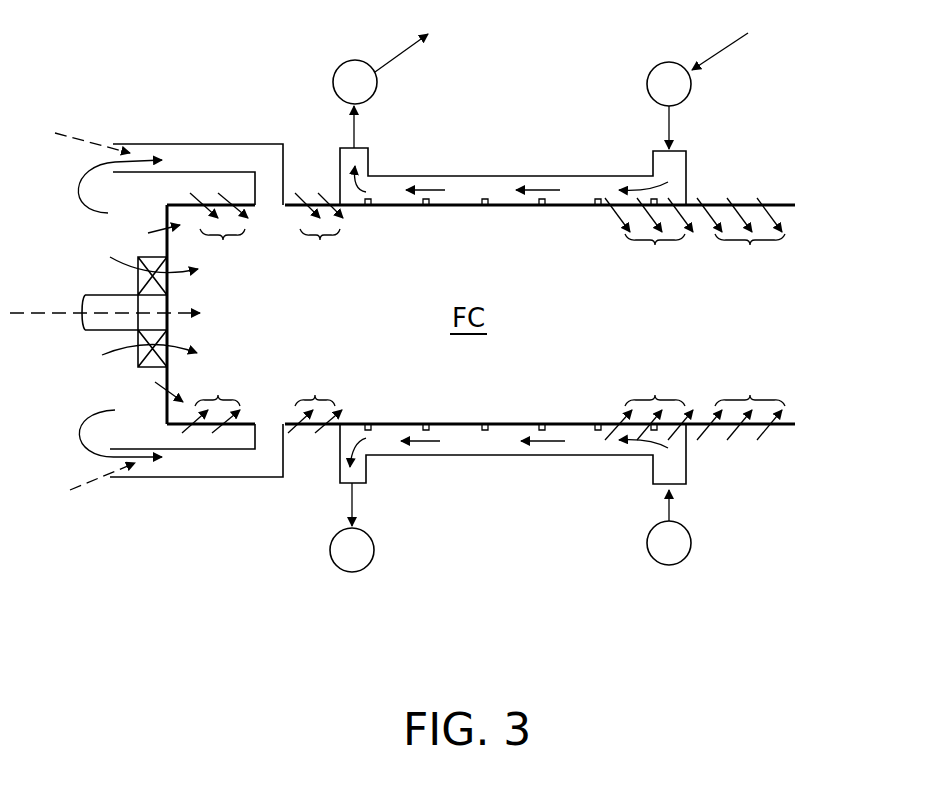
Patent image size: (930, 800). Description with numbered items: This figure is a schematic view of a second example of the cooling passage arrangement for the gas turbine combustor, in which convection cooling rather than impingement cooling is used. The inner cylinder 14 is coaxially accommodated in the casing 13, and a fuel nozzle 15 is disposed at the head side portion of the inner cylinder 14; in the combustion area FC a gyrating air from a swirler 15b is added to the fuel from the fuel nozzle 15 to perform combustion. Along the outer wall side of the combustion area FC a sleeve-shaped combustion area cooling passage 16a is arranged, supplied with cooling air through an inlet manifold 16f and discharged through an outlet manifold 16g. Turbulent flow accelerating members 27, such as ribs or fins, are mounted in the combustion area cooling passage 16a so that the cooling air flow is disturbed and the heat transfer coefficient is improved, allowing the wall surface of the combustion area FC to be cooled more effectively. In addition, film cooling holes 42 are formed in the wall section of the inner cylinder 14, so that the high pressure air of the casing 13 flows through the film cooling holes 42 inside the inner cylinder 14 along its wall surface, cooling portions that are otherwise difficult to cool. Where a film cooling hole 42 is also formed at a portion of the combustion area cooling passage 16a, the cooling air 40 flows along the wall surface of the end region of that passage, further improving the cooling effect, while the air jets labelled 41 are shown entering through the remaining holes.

The casing 13 is at (800, 198).
The inner cylinder 14 is at (308, 183).
The fuel nozzle 15 is at (88, 345).
The swirler 15b is at (138, 283).
The combustion area cooling passage 16a is at (483, 164).
The inlet manifold 16f is at (693, 90).
The outlet manifold 16g is at (376, 88).
The turbulent flow accelerating members 27 is at (430, 206).
The cooling air 40 is at (649, 319).
The side air jets 41 is at (483, 316).
The film cooling holes 42 is at (190, 198).